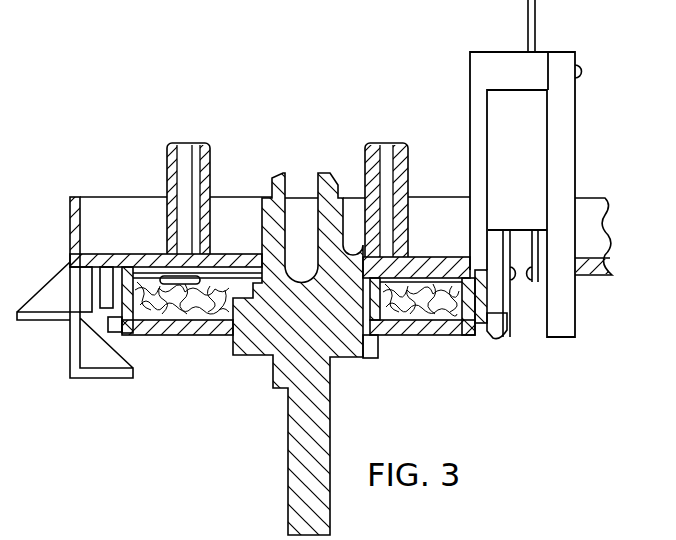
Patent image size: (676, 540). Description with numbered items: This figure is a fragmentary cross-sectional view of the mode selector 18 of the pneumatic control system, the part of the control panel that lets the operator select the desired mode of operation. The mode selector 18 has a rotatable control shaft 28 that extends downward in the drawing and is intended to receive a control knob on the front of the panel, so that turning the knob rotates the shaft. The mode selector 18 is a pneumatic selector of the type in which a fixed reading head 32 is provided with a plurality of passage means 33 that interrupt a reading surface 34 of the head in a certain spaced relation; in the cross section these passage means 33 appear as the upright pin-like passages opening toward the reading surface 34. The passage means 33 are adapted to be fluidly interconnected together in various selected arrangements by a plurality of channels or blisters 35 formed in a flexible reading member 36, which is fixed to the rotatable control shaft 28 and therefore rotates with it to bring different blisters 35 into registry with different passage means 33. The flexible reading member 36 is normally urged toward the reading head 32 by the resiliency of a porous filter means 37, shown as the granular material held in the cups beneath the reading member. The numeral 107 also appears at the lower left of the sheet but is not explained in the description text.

The mode selector 18 is at (550, 372).
The rotatable control shaft 28 is at (288, 468).
The fixed reading head 32 is at (240, 255).
The passage means 33 is at (410, 257).
The reading surface 34 is at (430, 295).
The blisters 35 is at (173, 277).
The flexible reading member 36 is at (213, 257).
The porous filter means 37 is at (427, 332).
The lead 107 is at (38, 538).